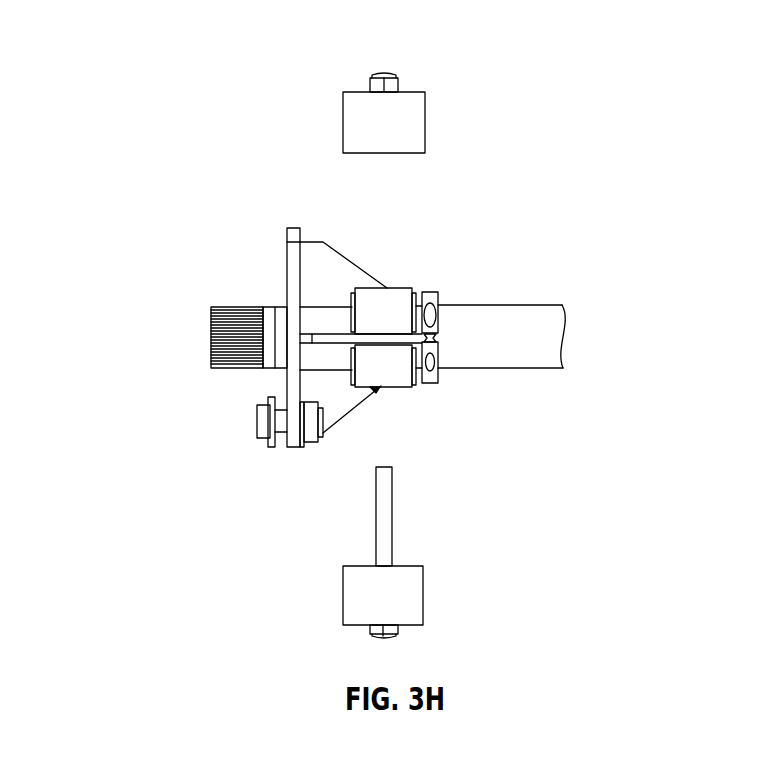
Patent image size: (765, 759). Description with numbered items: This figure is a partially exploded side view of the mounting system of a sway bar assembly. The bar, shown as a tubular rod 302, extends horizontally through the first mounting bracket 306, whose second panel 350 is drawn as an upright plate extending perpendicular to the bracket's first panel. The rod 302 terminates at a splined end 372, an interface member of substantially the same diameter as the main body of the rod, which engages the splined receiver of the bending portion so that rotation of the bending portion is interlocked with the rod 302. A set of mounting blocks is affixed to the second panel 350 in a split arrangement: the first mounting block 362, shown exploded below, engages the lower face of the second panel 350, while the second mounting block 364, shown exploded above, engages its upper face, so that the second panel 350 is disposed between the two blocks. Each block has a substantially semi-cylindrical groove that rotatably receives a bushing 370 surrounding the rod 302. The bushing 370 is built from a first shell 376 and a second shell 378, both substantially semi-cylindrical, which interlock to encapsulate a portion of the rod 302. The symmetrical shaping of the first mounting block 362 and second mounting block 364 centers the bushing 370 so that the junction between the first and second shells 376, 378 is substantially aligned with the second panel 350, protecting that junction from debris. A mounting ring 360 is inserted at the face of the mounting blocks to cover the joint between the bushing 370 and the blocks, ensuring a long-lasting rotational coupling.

The tubular rod 302 is at (493, 358).
The first mounting bracket 306 is at (293, 438).
The second panel 350 is at (395, 337).
The mounting ring 360 is at (427, 292).
The first mounting block 362 is at (410, 592).
The second mounting block 364 is at (410, 123).
The bushing 370 is at (395, 275).
The splined end 372 is at (240, 368).
The first shell 376 is at (372, 386).
The second shell 378 is at (370, 288).